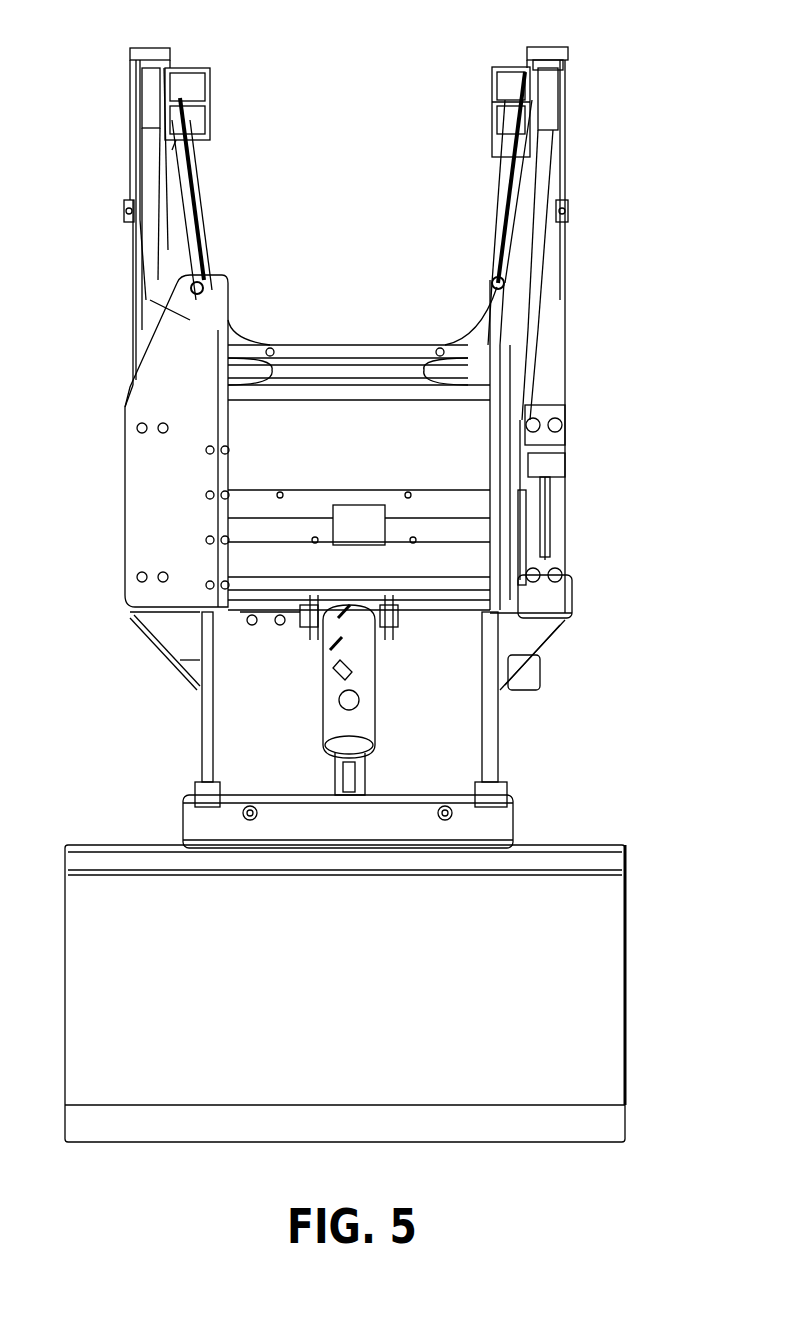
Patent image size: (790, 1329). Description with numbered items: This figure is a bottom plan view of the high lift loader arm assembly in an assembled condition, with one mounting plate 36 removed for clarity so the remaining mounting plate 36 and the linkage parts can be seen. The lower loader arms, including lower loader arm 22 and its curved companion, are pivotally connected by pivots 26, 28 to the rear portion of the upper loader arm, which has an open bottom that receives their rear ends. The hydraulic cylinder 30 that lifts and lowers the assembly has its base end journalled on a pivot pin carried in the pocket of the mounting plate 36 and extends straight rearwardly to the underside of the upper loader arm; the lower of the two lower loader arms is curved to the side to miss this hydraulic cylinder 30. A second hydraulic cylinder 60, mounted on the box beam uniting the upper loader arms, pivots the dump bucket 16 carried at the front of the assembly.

The dump bucket 16 is at (600, 945).
The lower loader arm 22 is at (500, 181).
The pivot 26 is at (492, 120).
The pivot 28 is at (548, 80).
The hydraulic cylinder 30 is at (568, 355).
The mounting plate 36 is at (142, 472).
The hydraulic cylinder 60 is at (362, 680).